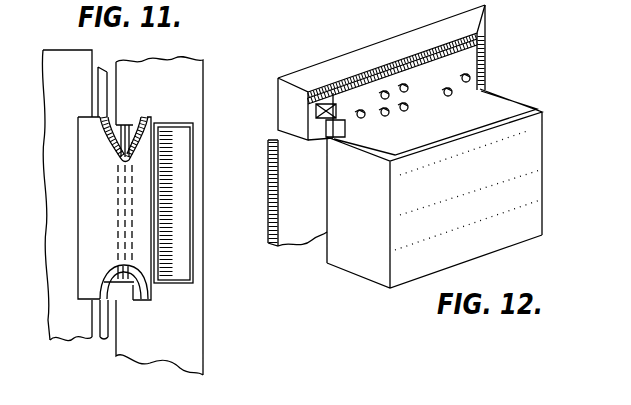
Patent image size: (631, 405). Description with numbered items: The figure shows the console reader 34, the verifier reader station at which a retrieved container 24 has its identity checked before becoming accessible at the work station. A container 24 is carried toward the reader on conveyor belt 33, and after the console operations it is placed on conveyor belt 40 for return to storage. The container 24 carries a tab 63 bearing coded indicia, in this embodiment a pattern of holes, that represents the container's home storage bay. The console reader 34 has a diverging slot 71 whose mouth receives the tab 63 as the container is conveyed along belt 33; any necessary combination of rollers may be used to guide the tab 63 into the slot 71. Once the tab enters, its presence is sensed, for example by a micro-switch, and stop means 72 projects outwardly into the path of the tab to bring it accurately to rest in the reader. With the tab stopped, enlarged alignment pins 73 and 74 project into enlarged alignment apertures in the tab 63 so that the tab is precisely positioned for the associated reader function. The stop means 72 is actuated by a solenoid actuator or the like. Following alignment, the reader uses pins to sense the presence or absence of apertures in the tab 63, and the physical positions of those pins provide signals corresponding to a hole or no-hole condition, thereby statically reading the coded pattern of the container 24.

In FIG. 11, the container 24 is at (193, 202).
In FIG. 12, the container 24 is at (484, 235).
In FIG. 11, the conveyor belt 33 is at (199, 96).
In FIG. 11, the console reader 34 is at (148, 111).
In FIG. 12, the console reader 34 is at (346, 52).
In FIG. 11, the conveyor belt 40 is at (55, 288).
In FIG. 11, the container tab 63 is at (120, 148).
In FIG. 12, the container tab 63 is at (465, 53).
In FIG. 11, the diverging slot 71 is at (127, 115).
In FIG. 11, the stop means 72 is at (128, 300).
In FIG. 12, the stop means 72 is at (327, 140).
In FIG. 12, the alignment pin 73 is at (356, 118).
In FIG. 12, the alignment pin 74 is at (468, 72).